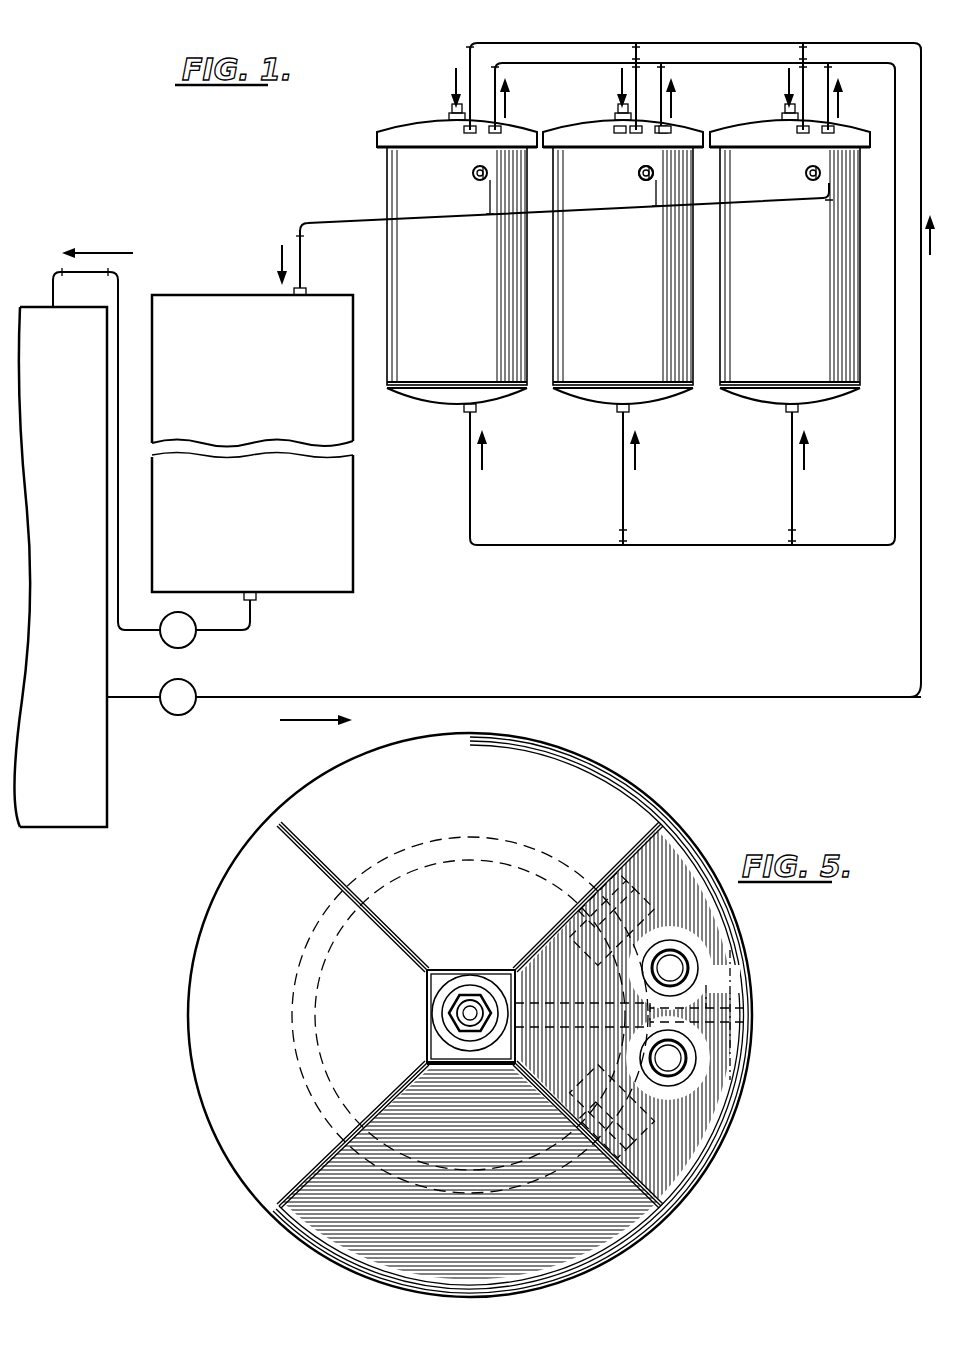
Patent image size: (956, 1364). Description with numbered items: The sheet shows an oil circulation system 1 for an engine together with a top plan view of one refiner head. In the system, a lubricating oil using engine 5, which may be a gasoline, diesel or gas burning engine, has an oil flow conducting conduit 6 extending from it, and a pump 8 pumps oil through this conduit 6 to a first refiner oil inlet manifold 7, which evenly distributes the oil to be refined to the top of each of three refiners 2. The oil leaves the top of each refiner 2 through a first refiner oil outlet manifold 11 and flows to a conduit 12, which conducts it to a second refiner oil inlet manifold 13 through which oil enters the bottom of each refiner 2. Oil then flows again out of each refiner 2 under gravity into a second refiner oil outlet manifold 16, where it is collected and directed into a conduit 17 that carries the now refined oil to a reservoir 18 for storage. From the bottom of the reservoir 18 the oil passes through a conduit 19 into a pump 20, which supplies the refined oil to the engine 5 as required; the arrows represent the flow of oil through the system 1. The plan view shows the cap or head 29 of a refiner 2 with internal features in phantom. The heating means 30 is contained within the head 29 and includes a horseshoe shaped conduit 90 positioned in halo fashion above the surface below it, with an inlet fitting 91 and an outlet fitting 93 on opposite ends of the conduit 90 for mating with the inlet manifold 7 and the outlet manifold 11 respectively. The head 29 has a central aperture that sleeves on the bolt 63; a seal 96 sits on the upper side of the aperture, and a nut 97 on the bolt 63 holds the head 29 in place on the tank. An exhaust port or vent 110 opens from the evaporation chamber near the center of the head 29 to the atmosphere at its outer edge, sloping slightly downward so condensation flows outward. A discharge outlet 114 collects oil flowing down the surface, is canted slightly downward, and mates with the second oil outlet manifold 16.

In FIG. 1, the oil circulation system 1 is at (303, 200).
In FIG. 1, the refiner 2 is at (515, 400).
In FIG. 1, the engine 5 is at (108, 760).
In FIG. 1, the oil flow conducting conduit 6 is at (268, 697).
In FIG. 1, the first refiner oil inlet manifold 7 is at (670, 43).
In FIG. 1, the pump 8 is at (192, 710).
In FIG. 1, the first refiner oil outlet manifold 11 is at (724, 63).
In FIG. 1, the conduit 12 is at (895, 486).
In FIG. 1, the second refiner oil inlet manifold 13 is at (686, 545).
In FIG. 1, the second refiner oil outlet manifold 16 is at (752, 205).
In FIG. 1, the conduit 17 is at (362, 222).
In FIG. 1, the reservoir 18 is at (353, 530).
In FIG. 1, the conduit 19 is at (252, 606).
In FIG. 1, the pump 20 is at (192, 643).
In FIG. 5, the head 29 is at (585, 1274).
In FIG. 5, the heating means 30 is at (498, 1190).
In FIG. 5, the bolt 63 is at (457, 1013).
In FIG. 5, the horseshoe shaped conduit 90 is at (314, 1060).
In FIG. 1, the inlet fitting 91 is at (620, 126).
In FIG. 5, the inlet fitting 91 is at (673, 960).
In FIG. 1, the outlet fitting 93 is at (665, 126).
In FIG. 5, the outlet fitting 93 is at (674, 1054).
In FIG. 5, the seal 96 is at (497, 1006).
In FIG. 5, the nut 97 is at (478, 998).
In FIG. 5, the vent 110 is at (630, 1015).
In FIG. 1, the discharge outlet 114 is at (642, 164).